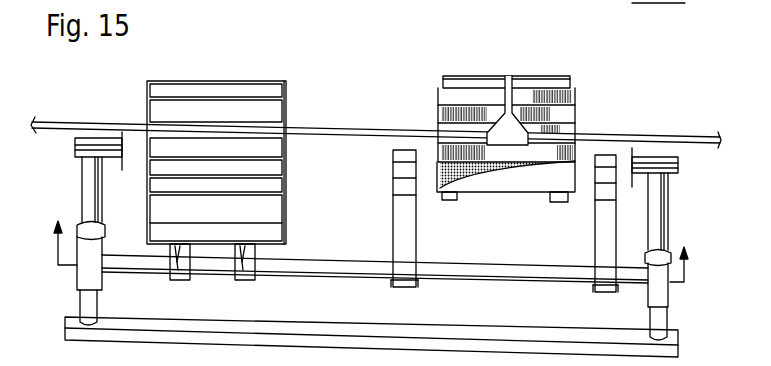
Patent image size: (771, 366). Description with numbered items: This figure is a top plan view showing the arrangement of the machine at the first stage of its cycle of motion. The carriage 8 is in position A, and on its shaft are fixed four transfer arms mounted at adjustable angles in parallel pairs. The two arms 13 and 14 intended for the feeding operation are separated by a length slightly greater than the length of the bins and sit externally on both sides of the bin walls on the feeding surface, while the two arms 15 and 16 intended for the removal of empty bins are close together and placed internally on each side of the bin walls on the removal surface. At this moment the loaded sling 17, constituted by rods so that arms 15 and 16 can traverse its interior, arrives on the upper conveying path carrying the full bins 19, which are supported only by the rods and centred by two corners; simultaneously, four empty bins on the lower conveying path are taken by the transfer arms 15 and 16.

The carriage 8 is at (335, 272).
The transfer arm 13 is at (595, 240).
The transfer arm 14 is at (393, 237).
The transfer arm 15 is at (245, 278).
The transfer arm 16 is at (180, 278).
The sling 17 is at (520, 141).
The bin 19 is at (479, 192).